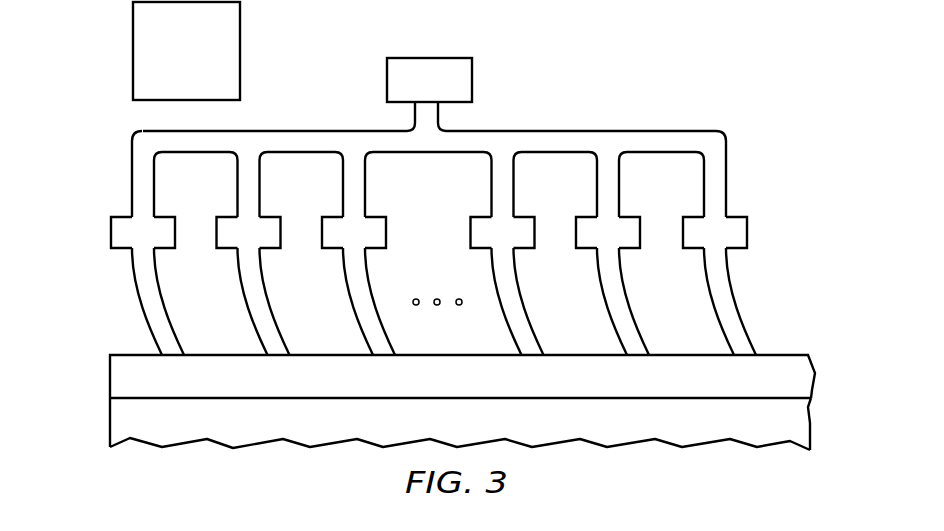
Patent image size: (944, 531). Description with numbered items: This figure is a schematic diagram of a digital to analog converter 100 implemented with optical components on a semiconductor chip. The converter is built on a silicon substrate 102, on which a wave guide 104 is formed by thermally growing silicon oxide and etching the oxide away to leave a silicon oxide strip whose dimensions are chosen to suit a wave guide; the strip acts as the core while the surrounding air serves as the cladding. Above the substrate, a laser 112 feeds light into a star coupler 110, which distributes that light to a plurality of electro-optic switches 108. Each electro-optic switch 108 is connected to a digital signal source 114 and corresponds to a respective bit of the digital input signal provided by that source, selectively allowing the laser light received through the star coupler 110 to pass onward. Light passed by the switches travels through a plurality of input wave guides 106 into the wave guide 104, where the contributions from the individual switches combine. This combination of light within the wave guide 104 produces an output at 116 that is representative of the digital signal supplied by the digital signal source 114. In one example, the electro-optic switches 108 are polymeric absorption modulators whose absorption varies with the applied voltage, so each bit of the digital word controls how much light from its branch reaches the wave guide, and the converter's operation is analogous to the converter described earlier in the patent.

The digital to analog converter 100 is at (637, 98).
The silicon substrate 102 is at (812, 425).
The wave guide 104 is at (257, 398).
The input wave guides 106 is at (134, 280).
The electro-optic switches 108 is at (111, 228).
The star coupler 110 is at (307, 131).
The laser 112 is at (473, 78).
The digital signal source 114 is at (133, 52).
The output 116 is at (817, 380).